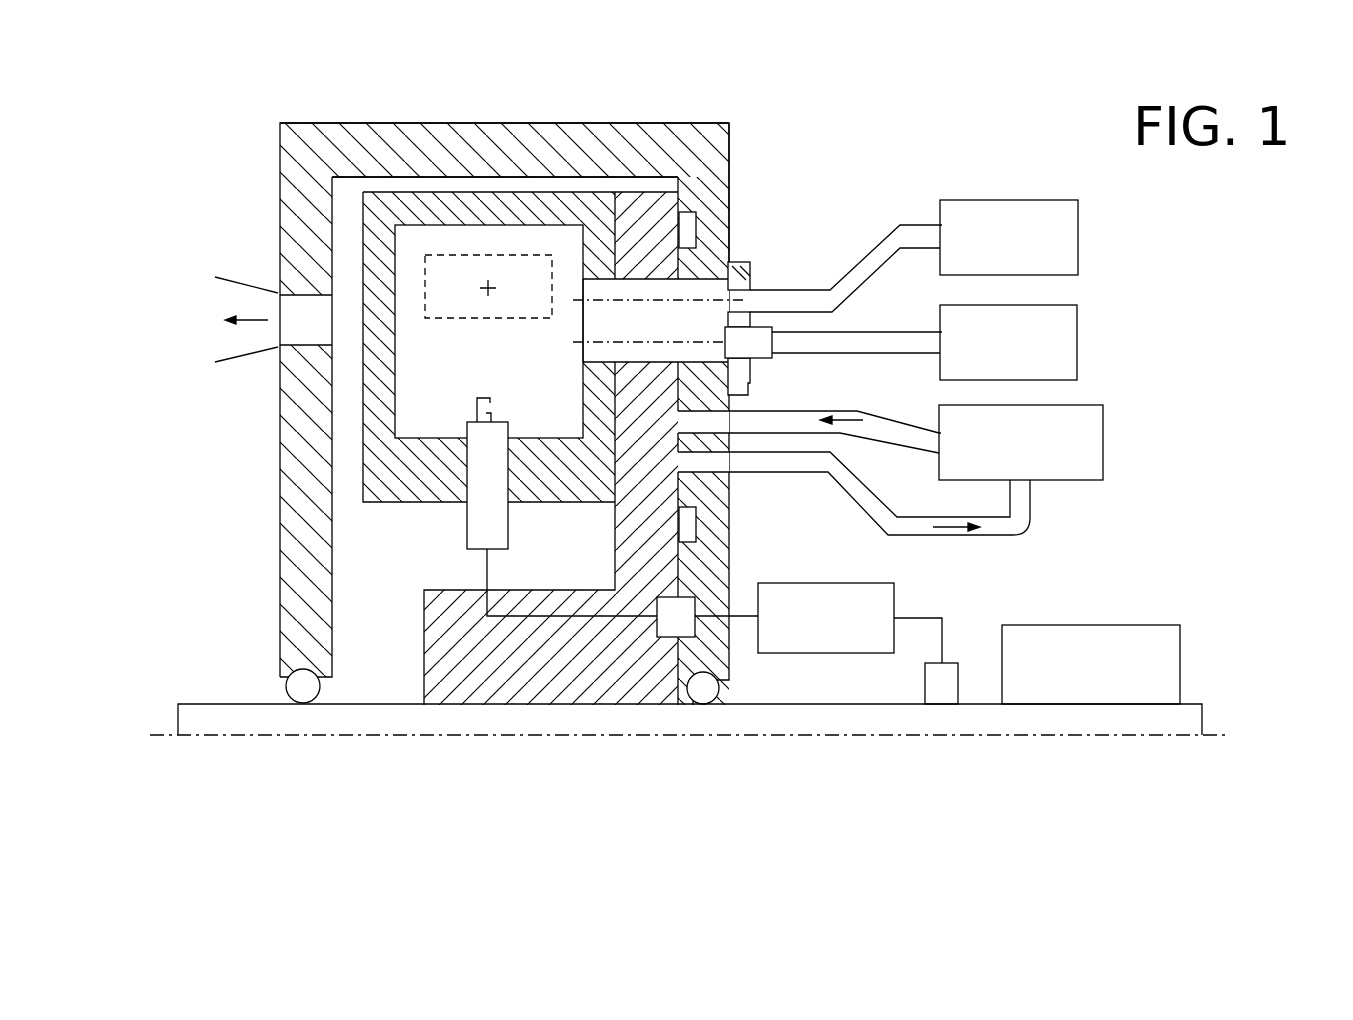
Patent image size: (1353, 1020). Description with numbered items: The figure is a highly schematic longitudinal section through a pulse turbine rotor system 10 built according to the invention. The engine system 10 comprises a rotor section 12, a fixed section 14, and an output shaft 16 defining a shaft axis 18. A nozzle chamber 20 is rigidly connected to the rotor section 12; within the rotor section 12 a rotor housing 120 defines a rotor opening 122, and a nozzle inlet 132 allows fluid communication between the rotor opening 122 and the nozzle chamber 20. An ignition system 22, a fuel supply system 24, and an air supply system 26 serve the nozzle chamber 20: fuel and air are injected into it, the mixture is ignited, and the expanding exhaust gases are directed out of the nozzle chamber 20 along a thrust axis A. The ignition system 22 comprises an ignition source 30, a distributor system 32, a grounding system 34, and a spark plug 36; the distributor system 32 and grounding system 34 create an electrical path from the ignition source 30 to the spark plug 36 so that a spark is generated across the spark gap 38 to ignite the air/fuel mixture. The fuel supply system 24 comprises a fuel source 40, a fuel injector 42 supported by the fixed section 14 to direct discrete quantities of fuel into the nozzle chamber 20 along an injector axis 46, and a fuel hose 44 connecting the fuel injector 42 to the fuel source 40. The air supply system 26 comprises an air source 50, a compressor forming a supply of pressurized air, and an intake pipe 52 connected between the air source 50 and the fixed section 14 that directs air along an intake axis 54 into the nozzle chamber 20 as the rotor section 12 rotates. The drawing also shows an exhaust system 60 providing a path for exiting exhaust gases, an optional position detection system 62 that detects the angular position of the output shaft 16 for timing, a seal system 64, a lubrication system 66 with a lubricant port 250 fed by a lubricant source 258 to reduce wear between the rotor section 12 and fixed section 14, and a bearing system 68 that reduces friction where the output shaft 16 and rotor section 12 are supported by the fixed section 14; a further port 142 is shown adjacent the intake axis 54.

The pulse turbine rotor system 10 is at (240, 137).
The rotor section 12 is at (405, 512).
The fixed section 14 is at (240, 525).
The output shaft 16 is at (315, 722).
The shaft axis 18 is at (437, 738).
The nozzle chamber 20 is at (476, 384).
The ignition system 22 is at (915, 598).
The fuel supply system 24 is at (1093, 323).
The air supply system 26 is at (1093, 218).
The ignition source 30 is at (857, 583).
The distributor system 32 is at (737, 575).
The grounding system 34 is at (913, 688).
The spark plug 36 is at (495, 530).
The spark gap 38 is at (488, 400).
The fuel source 40 is at (1072, 355).
The fuel injector 42 is at (772, 357).
The fuel hose 44 is at (862, 345).
The injector axis 46 is at (705, 345).
The air source 50 is at (1072, 242).
The intake pipe 52 is at (873, 255).
The intake axis 54 is at (697, 298).
The exhaust system 60 is at (205, 286).
The position detection system 62 is at (1123, 630).
The seal system 64 is at (695, 200).
The lubrication system 66 is at (1117, 423).
The bearing system 68 is at (268, 689).
The rotor housing 120 is at (637, 208).
The rotor opening 122 is at (635, 330).
The nozzle inlet 132 is at (583, 318).
The inlet port 142 is at (710, 315).
The lubricant port 250 is at (702, 422).
The lubricant source 258 is at (1097, 458).
The thrust axis A is at (488, 290).